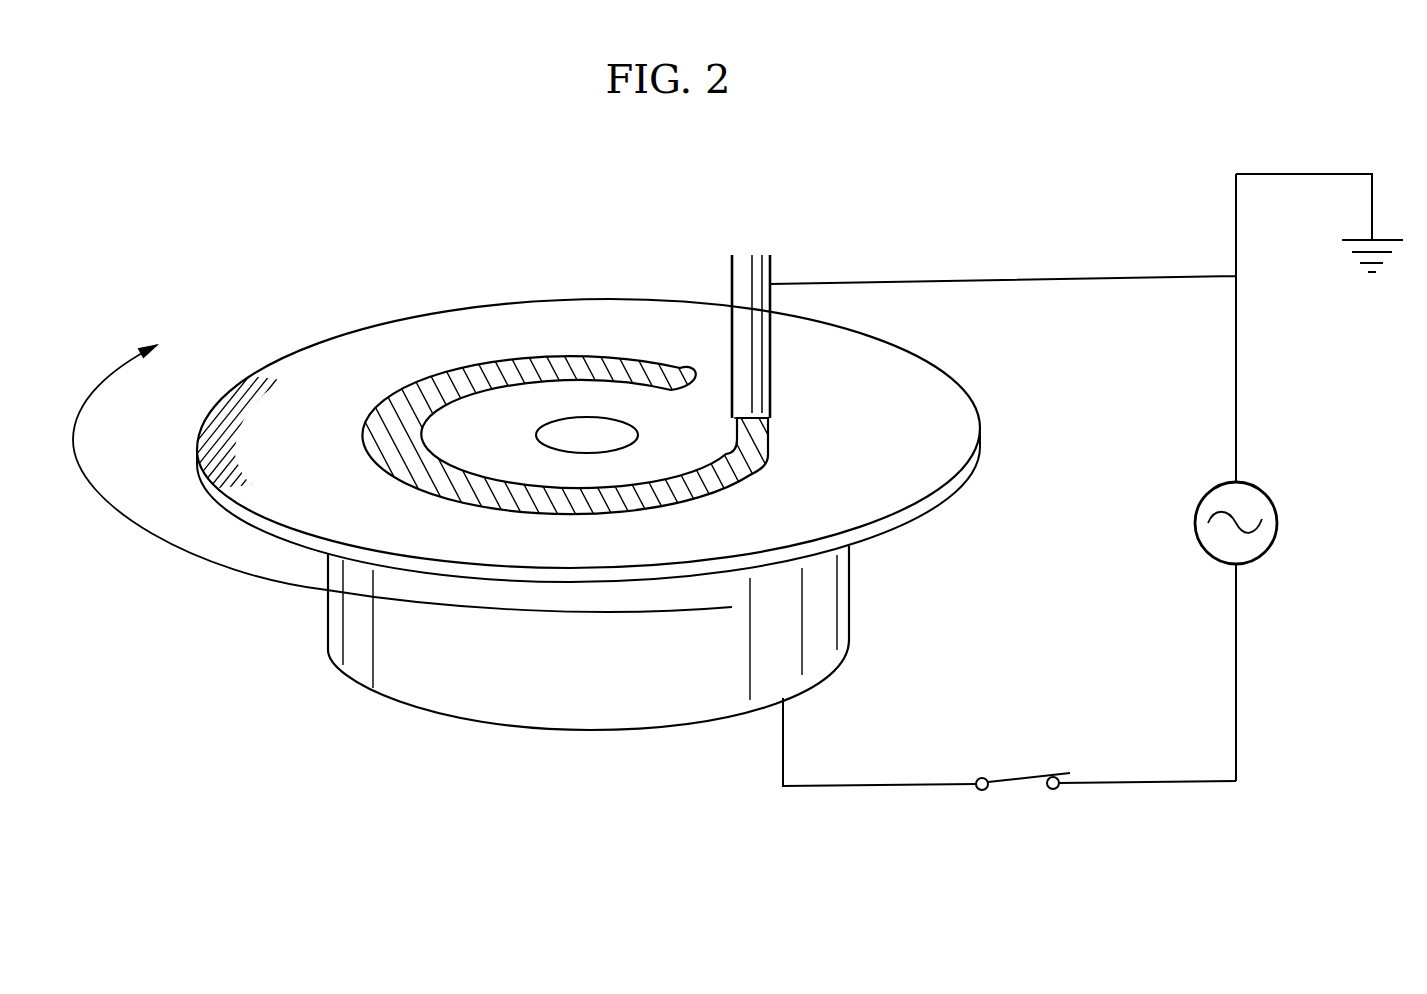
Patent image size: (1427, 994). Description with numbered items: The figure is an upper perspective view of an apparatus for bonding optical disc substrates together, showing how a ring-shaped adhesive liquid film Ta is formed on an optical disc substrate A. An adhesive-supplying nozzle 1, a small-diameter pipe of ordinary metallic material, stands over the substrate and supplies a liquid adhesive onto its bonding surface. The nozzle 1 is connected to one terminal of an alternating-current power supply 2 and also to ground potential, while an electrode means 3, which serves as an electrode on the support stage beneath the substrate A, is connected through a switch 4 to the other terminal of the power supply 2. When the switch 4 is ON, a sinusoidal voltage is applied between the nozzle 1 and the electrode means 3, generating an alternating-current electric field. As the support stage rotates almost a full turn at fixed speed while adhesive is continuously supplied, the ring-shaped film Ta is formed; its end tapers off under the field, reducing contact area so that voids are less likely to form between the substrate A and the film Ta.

The adhesive-supplying nozzle 1 is at (752, 262).
The alternating-current power supply 2 is at (1268, 555).
The electrode means 3 is at (643, 703).
The switch 4 is at (1030, 772).
The optical disc substrate A is at (408, 335).
The ring-shaped adhesive liquid film Ta is at (578, 358).